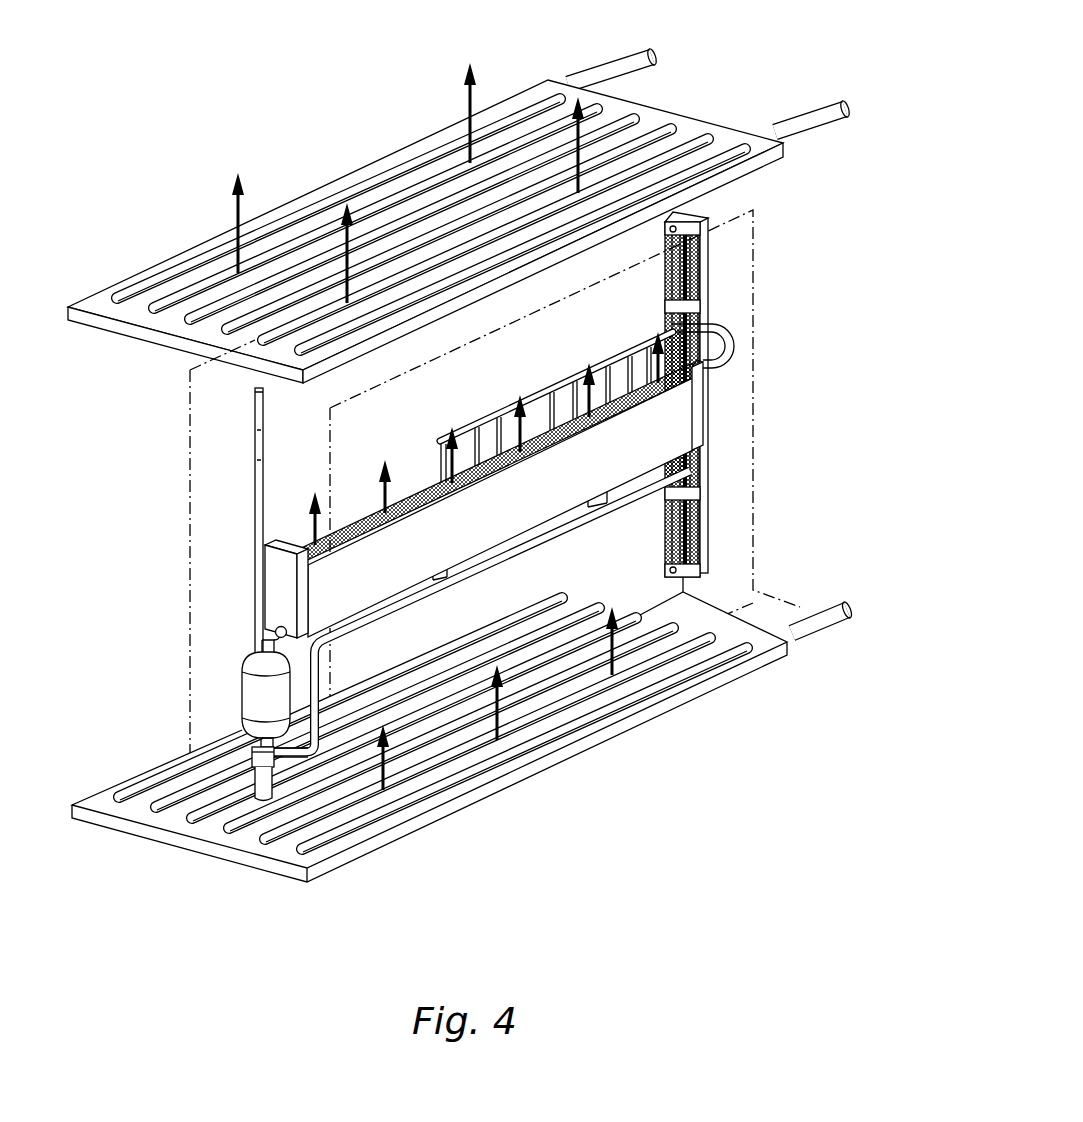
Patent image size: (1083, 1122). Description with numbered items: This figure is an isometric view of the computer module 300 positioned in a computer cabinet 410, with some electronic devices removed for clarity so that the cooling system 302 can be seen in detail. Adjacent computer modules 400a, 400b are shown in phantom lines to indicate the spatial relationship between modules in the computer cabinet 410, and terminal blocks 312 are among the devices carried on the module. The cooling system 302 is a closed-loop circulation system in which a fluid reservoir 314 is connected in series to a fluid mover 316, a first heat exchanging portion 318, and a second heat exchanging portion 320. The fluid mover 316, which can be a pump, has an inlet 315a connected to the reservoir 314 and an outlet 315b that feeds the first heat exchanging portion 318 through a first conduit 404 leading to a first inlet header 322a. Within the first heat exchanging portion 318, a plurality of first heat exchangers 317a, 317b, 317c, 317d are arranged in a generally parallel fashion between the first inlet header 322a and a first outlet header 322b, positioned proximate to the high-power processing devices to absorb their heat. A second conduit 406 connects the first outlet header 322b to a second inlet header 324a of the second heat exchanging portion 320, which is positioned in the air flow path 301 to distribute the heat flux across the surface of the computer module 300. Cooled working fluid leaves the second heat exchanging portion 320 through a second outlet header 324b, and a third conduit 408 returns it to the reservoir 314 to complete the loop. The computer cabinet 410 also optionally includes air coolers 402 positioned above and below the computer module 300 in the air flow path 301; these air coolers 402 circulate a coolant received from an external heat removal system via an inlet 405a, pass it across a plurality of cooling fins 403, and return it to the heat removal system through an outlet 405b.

The computer module 300 is at (650, 672).
The air flow path 301 is at (568, 158).
The cooling system 302 is at (452, 607).
The terminal blocks 312 is at (713, 253).
The fluid reservoir 314 is at (246, 701).
The inlet 315a is at (236, 756).
The outlet 315b is at (273, 758).
The fluid mover 316 is at (258, 793).
The first heat exchanger 317a is at (465, 443).
The first heat exchanger 317b is at (507, 430).
The first heat exchanger 317c is at (567, 403).
The first heat exchanger 317d is at (625, 372).
The first heat exchanging portion 318 is at (474, 600).
The second heat exchanging portion 320 is at (678, 430).
The first inlet header 322a is at (482, 563).
The first outlet header 322b is at (718, 282).
The second inlet header 324a is at (704, 393).
The second outlet header 324b is at (276, 590).
The adjacent computer module 400a is at (762, 588).
The adjacent computer module 400b is at (190, 500).
The air coolers 402 is at (697, 118).
The cooling fins 403 is at (323, 342).
The first conduit 404 is at (319, 700).
The inlet 405a is at (600, 68).
The outlet 405b is at (797, 120).
The second conduit 406 is at (721, 347).
The third conduit 408 is at (274, 633).
The computer cabinet 410 is at (145, 428).